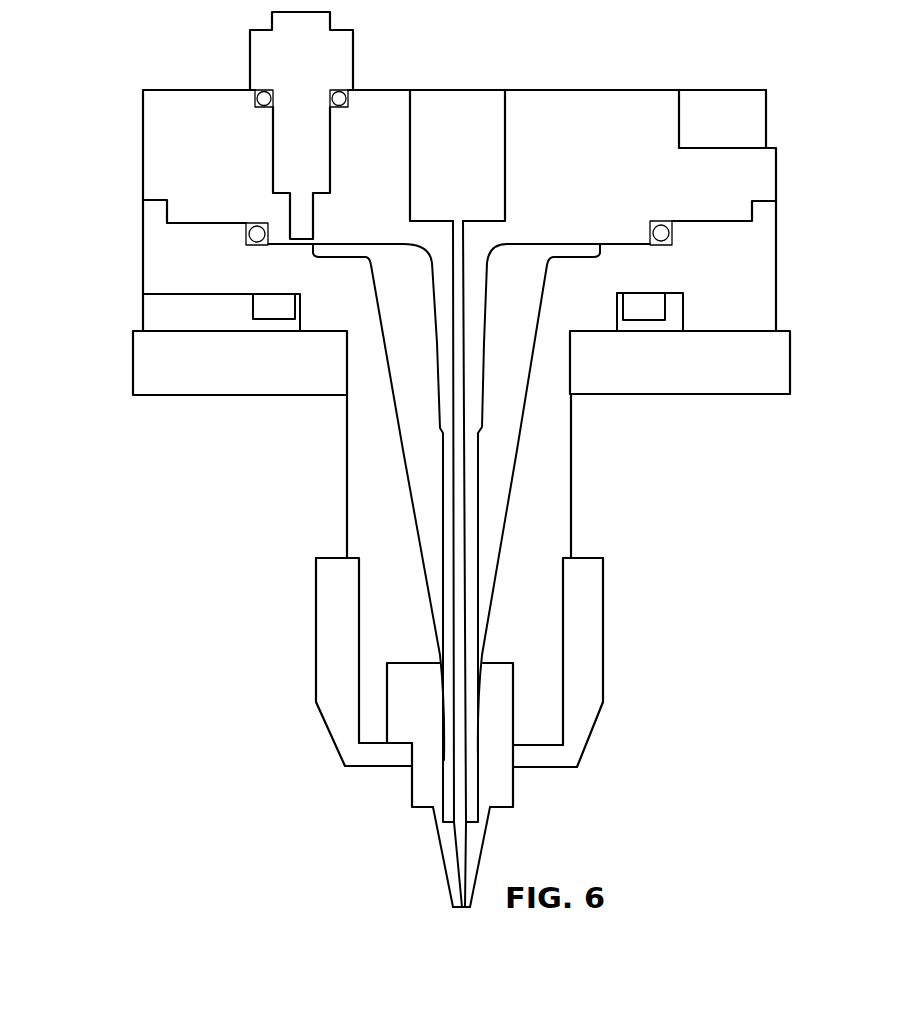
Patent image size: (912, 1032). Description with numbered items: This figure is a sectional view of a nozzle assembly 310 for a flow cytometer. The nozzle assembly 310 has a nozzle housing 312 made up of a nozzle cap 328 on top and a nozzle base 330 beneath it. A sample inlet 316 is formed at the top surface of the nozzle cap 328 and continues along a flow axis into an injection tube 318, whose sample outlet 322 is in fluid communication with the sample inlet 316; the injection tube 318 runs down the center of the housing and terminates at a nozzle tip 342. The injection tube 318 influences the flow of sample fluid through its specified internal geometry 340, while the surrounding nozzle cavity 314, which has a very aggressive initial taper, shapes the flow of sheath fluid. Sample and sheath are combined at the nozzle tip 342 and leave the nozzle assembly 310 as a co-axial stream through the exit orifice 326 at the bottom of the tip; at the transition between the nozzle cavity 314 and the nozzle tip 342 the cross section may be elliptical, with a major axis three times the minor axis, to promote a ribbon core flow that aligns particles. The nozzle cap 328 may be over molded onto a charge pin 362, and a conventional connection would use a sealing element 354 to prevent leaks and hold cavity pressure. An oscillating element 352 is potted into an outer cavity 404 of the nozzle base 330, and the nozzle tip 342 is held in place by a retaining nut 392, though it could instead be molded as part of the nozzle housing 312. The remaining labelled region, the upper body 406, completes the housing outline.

The nozzle assembly 310 is at (394, 51).
The nozzle housing 312 is at (122, 242).
The nozzle cavity 314 is at (420, 468).
The sample inlet 316 is at (470, 127).
The injection tube 318 is at (472, 482).
The sample outlet 322 is at (452, 822).
The gate orifice 326 is at (464, 910).
The nozzle cap 328 is at (766, 116).
The nozzle base 330 is at (777, 258).
The internal geometry 340 is at (565, 625).
The nozzle tip 342 is at (428, 787).
The oscillating element 352 is at (281, 310).
The sealing element 354 is at (342, 97).
The charge pin 362 is at (275, 60).
The retaining nut 392 is at (593, 730).
The outer cavity 404 is at (198, 318).
The upper body 406 is at (670, 90).